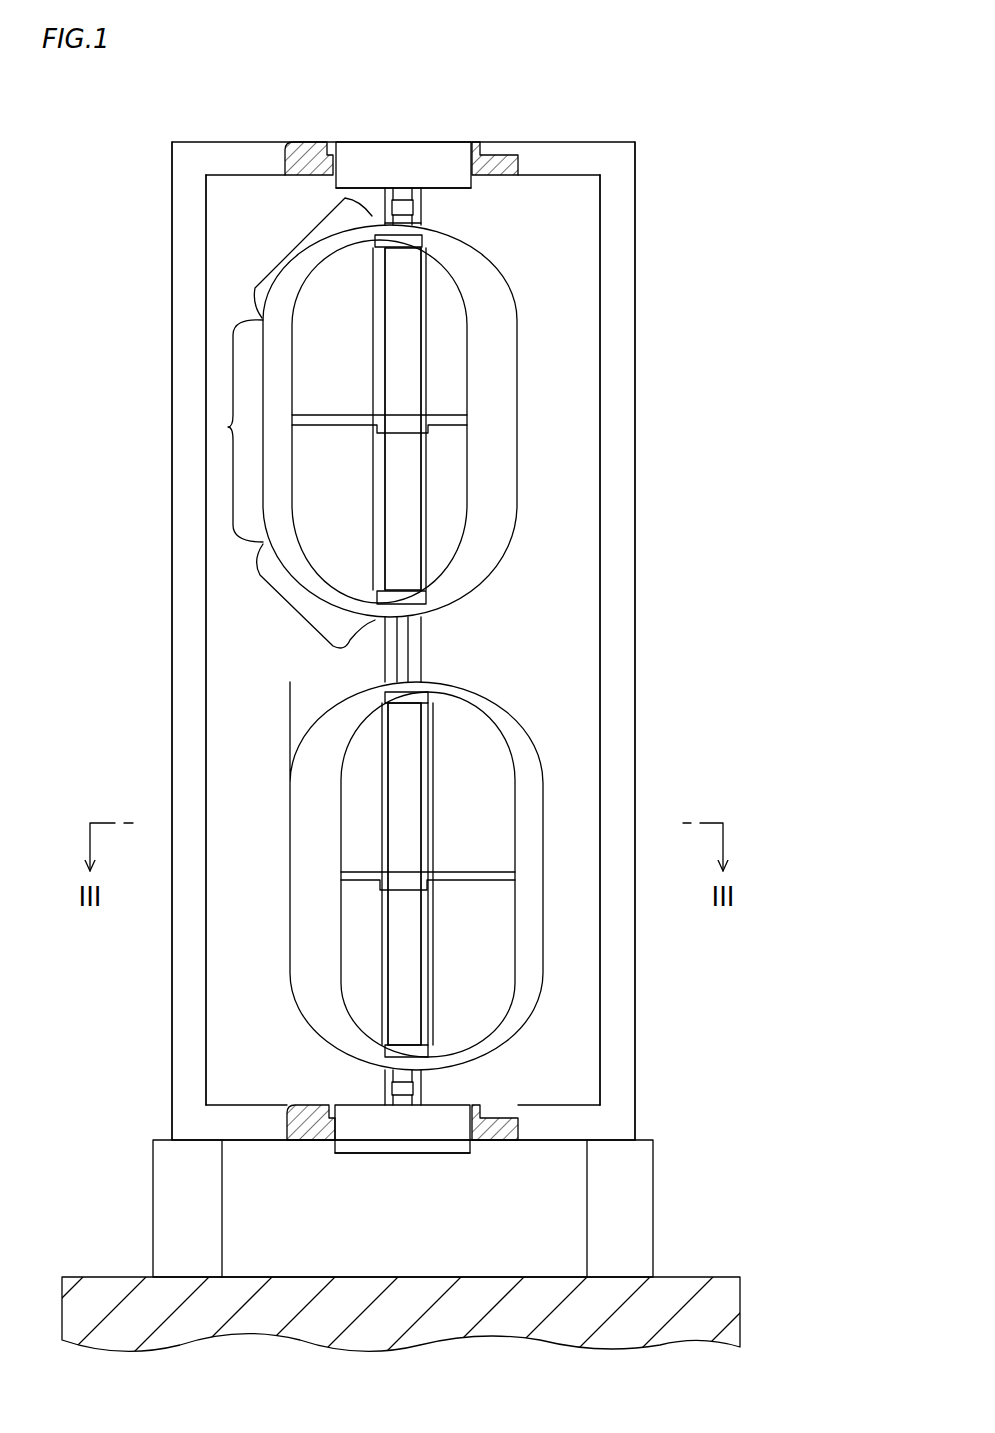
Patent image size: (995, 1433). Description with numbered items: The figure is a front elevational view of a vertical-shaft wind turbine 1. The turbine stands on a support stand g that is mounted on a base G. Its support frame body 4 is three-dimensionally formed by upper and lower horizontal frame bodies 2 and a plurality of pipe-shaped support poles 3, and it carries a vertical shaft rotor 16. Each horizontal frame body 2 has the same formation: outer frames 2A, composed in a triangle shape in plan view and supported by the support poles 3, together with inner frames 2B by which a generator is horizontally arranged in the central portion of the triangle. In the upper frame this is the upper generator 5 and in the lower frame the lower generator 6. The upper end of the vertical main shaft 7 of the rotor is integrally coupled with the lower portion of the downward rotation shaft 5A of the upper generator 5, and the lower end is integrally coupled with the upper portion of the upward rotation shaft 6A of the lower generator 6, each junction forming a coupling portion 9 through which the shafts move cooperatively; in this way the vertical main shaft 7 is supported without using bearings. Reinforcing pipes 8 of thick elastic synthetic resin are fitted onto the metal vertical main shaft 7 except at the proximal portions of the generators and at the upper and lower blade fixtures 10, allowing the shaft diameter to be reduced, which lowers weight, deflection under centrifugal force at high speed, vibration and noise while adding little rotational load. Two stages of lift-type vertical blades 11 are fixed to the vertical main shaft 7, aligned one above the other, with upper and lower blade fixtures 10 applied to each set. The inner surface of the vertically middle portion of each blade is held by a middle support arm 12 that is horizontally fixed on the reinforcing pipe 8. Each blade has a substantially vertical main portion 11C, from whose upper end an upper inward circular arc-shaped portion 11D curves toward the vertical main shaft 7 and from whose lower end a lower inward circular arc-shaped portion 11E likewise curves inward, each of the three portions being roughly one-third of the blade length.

The vertical-shaft wind turbine 1 is at (680, 222).
The horizontal frame body 2 is at (561, 139).
The outer frame 2A is at (243, 142).
The inner frame 2B is at (497, 142).
The support pole 3 is at (172, 660).
The support frame body 4 is at (639, 550).
The upper generator 5 is at (358, 142).
The downward rotation shaft 5A is at (433, 186).
The lower generator 6 is at (412, 1155).
The upward rotation shaft 6A is at (383, 1107).
The vertical main shaft 7 is at (373, 247).
The reinforcing pipe 8 is at (413, 493).
The coupling portion 9 is at (414, 211).
The blade fixture 10 is at (428, 240).
The lift-type vertical blade 11 is at (371, 333).
The substantially vertical main portion 11C is at (228, 427).
The upper inward circular arc-shaped portion 11D is at (303, 258).
The lower inward circular arc-shaped portion 11E is at (310, 597).
The middle support arm 12 is at (327, 415).
The vertical shaft rotor 16 is at (413, 634).
The support stand g is at (653, 1188).
The base G is at (685, 1277).